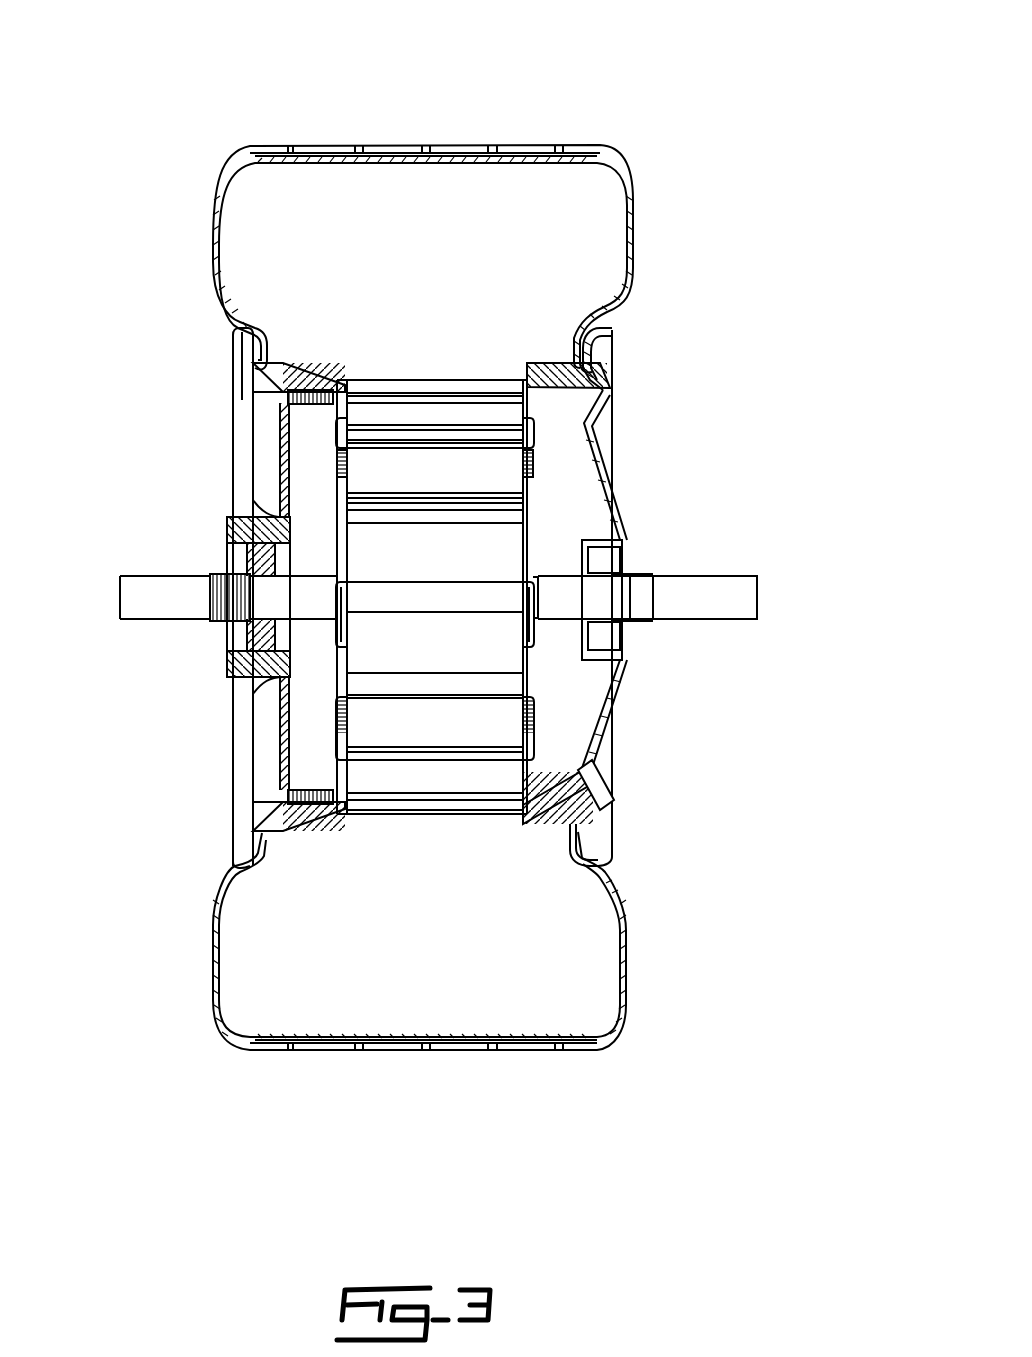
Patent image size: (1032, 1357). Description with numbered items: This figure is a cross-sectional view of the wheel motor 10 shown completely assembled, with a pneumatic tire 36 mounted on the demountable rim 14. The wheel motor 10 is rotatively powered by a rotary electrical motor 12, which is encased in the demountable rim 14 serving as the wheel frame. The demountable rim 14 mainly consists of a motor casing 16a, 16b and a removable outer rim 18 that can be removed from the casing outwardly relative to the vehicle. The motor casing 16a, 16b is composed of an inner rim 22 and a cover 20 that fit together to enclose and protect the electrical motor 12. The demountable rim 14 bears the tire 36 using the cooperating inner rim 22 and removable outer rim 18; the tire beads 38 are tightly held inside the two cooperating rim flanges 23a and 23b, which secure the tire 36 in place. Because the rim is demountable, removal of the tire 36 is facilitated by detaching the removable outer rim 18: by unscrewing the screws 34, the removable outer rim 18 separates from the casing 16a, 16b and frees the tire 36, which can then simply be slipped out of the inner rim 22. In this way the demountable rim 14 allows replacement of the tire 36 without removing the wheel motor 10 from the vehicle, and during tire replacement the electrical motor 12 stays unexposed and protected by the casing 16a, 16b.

The wheel motor 10 is at (692, 184).
The rotary electrical motor 12 is at (410, 806).
The demountable rim 14 is at (625, 670).
The motor casing 16a is at (207, 597).
The motor casing 16b is at (682, 633).
The removable outer rim 18 is at (240, 352).
The cover 20 is at (287, 737).
The inner rim 22 is at (612, 363).
The rim flange 23a is at (592, 868).
The rim flange 23b is at (240, 846).
The screws 34 is at (287, 393).
The pneumatic tire 36 is at (215, 210).
The tire beads 38 is at (585, 850).